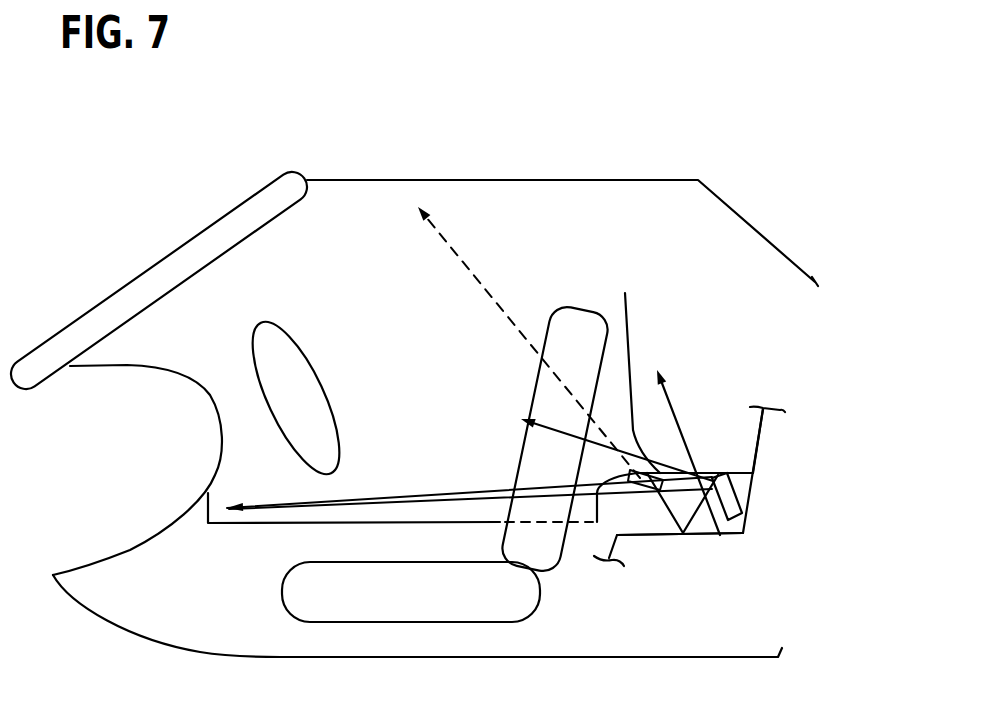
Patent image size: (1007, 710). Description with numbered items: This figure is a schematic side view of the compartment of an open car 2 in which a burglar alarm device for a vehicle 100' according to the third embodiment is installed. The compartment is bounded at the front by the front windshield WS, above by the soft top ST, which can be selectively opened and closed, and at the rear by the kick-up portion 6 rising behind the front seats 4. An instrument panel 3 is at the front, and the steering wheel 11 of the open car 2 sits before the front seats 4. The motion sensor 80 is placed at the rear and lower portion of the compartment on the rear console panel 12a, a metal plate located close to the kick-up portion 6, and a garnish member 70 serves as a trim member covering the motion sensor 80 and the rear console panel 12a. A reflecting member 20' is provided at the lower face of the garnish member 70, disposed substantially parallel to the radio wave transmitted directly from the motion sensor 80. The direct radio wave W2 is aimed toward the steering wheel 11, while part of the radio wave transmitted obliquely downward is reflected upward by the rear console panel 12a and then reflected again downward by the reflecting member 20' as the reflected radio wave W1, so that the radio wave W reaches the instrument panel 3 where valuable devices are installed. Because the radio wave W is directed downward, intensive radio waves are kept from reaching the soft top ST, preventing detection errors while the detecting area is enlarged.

The open car 2 is at (743, 153).
The instrument panel 3 is at (76, 480).
The front seats 4 is at (581, 333).
The kick-up portion 6 is at (741, 504).
The steering wheel 11 is at (298, 343).
The rear console panel 12a is at (667, 535).
The reflecting member 20' is at (634, 356).
The garnish member 70 is at (738, 468).
The motion sensor 80 is at (736, 497).
The burglar alarm device for a vehicle 100' is at (689, 435).
The front windshield WS is at (133, 303).
The soft top ST is at (457, 180).
The radio wave W is at (487, 492).
The reflected radio wave W1 is at (500, 497).
The direct radio wave W2 is at (558, 432).